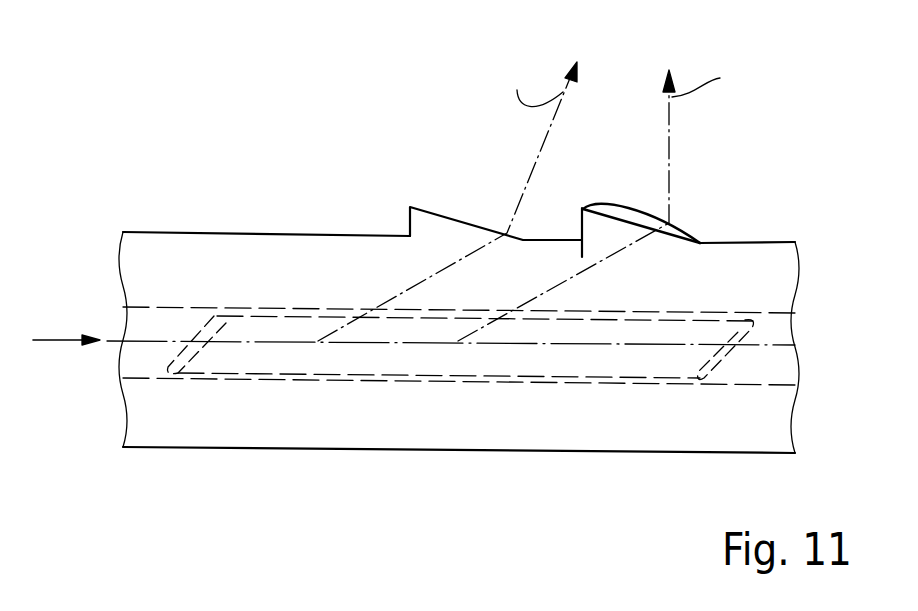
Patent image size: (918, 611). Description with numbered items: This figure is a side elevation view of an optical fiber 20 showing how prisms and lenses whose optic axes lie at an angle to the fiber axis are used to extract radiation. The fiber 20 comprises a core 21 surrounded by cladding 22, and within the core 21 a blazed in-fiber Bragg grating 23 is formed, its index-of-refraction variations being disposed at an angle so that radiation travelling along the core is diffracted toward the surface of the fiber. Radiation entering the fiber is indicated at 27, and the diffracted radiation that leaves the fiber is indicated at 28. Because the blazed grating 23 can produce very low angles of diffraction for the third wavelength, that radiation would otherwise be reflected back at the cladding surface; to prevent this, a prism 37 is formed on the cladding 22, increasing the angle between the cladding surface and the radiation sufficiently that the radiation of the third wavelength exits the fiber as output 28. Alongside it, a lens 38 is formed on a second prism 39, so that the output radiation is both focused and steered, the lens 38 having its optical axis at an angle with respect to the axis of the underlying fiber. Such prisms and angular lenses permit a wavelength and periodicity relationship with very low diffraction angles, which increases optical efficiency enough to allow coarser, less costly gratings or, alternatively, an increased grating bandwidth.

The optical fiber 20 is at (375, 452).
The core 21 is at (777, 368).
The cladding 22 is at (760, 422).
The in-fiber Bragg grating 23 is at (290, 367).
The input light beam 27 is at (68, 345).
The outcoupled light beam 28 is at (536, 152).
The prism 37 is at (440, 227).
The lens 38 is at (683, 231).
The prism 39 is at (593, 226).